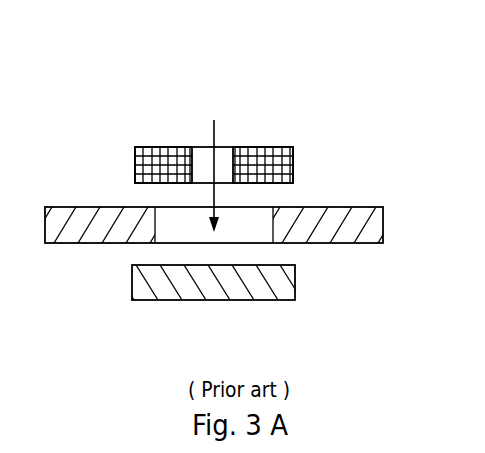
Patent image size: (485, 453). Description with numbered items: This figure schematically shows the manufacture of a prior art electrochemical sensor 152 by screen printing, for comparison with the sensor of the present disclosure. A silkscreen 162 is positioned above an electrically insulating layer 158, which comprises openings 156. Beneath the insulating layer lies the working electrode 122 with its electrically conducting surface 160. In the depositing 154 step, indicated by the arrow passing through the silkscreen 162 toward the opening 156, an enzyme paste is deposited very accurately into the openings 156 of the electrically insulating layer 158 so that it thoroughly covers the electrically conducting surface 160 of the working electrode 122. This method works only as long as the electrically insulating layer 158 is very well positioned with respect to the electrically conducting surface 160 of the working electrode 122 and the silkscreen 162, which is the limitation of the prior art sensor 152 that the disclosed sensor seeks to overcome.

The prior art electrochemical sensor 152 is at (344, 105).
The depositing 154 is at (214, 138).
The openings 156 is at (243, 230).
The electrically insulating layer 158 is at (103, 227).
The electrically conducting surface 160 is at (283, 282).
The working electrode 122 is at (213, 282).
The silkscreen 162 is at (280, 167).